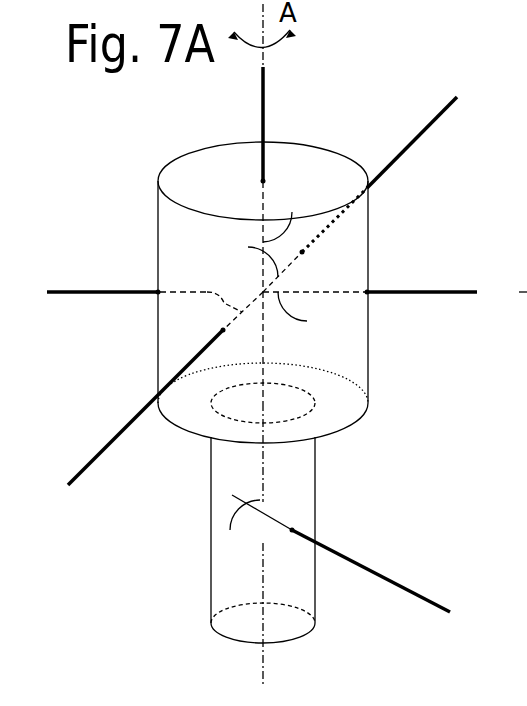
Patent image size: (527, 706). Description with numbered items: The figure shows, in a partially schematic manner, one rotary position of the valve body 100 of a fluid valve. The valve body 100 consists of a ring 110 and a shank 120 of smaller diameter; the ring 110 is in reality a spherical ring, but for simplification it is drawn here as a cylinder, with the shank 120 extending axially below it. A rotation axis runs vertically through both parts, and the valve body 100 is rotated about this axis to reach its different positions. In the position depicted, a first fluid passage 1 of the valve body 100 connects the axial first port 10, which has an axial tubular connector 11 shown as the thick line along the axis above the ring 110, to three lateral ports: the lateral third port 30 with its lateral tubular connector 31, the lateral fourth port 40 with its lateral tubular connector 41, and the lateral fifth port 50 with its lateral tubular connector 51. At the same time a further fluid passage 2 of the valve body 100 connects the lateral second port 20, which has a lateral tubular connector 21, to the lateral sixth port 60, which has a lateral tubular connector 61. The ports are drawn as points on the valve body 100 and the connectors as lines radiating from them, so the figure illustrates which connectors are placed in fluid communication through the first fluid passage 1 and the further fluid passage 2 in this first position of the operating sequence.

The first fluid passage 1 is at (279, 368).
The further fluid passage 2 is at (223, 304).
The first port 10 is at (262, 181).
The axial tubular connector 11 is at (265, 113).
The second port 20 is at (223, 332).
The lateral tubular connector 21 is at (148, 405).
The third port 30 is at (292, 528).
The lateral tubular connector 31 is at (428, 600).
The fourth port 40 is at (367, 290).
The lateral tubular connector 41 is at (402, 294).
The fifth port 50 is at (302, 252).
The lateral tubular connector 51 is at (408, 145).
The sixth port 60 is at (158, 290).
The lateral tubular connector 61 is at (125, 294).
The valve body 100 is at (108, 232).
The ring 110 is at (157, 212).
The shank 120 is at (210, 548).